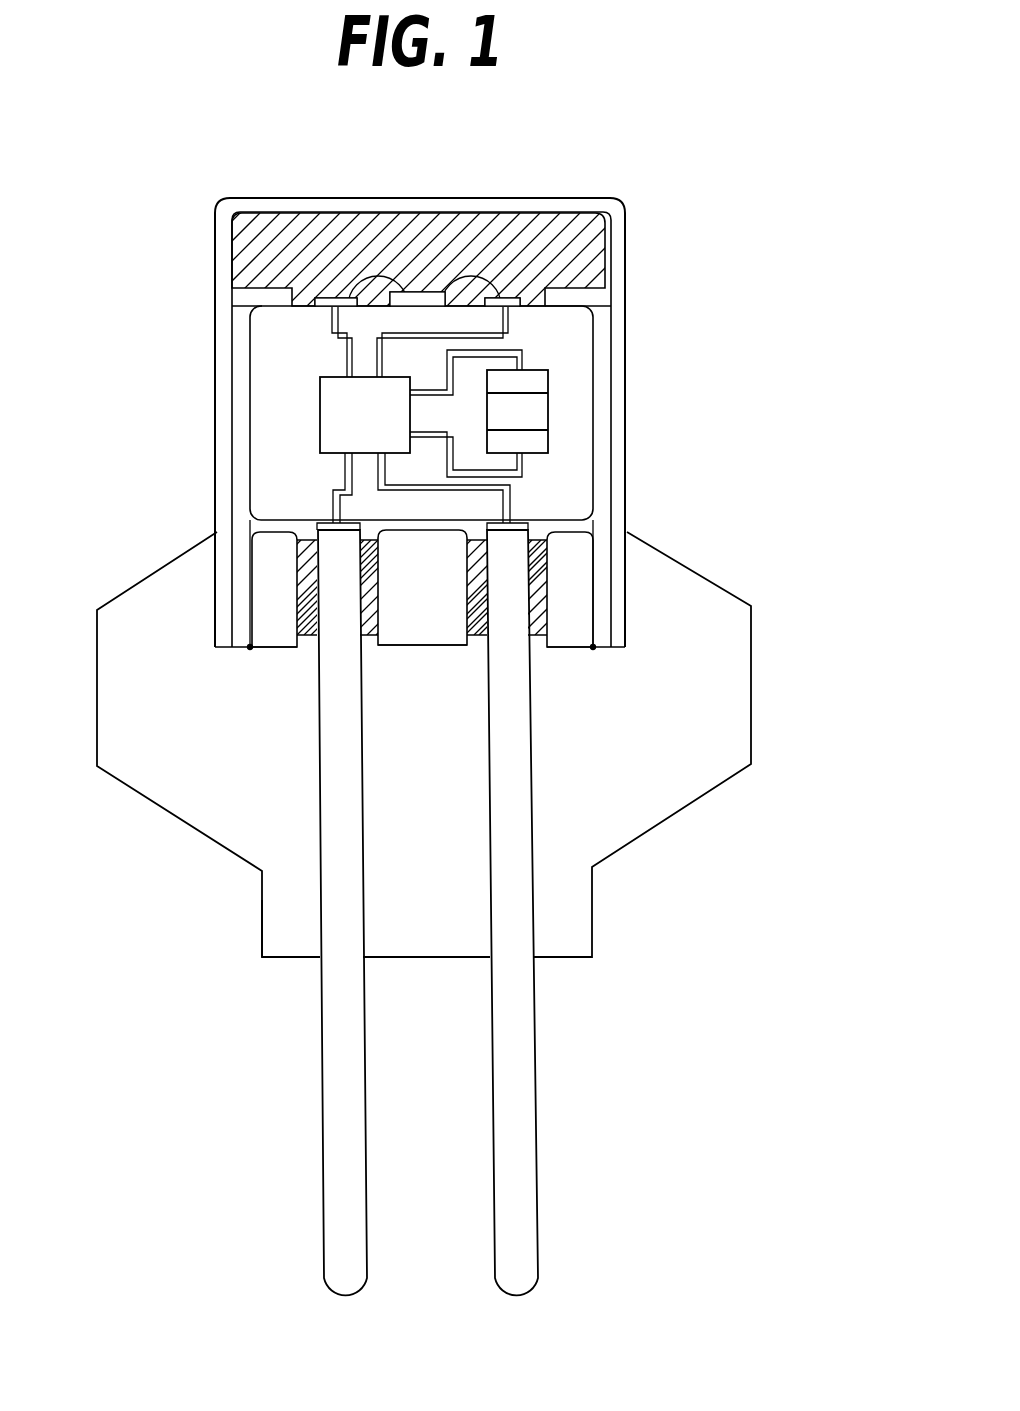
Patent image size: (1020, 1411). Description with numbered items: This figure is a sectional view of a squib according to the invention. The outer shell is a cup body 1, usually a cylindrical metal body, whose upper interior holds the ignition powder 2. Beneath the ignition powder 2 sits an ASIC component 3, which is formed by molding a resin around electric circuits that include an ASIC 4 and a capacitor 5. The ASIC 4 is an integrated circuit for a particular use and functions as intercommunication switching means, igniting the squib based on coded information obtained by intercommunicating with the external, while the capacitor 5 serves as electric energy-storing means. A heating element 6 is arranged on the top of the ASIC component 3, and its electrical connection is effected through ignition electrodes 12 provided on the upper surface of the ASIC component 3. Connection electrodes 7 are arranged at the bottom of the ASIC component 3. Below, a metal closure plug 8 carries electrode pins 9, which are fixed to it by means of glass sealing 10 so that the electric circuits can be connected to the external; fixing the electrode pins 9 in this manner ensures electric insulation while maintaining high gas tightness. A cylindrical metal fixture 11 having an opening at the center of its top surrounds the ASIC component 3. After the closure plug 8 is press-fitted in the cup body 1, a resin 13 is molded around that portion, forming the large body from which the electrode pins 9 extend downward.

The cup body 1 is at (278, 198).
The ignition powder 2 is at (570, 259).
The ASIC component 3 is at (572, 470).
The ASIC 4 is at (333, 419).
The capacitor 5 is at (535, 413).
The heating element 6 is at (418, 297).
The connection electrodes 7 is at (255, 521).
The closure plug 8 is at (262, 592).
The electrode pins 9 is at (329, 899).
The glass sealing 10 is at (545, 583).
The metal fixture 11 is at (560, 295).
The ignition electrodes 12 is at (315, 298).
The resin 13 is at (725, 709).